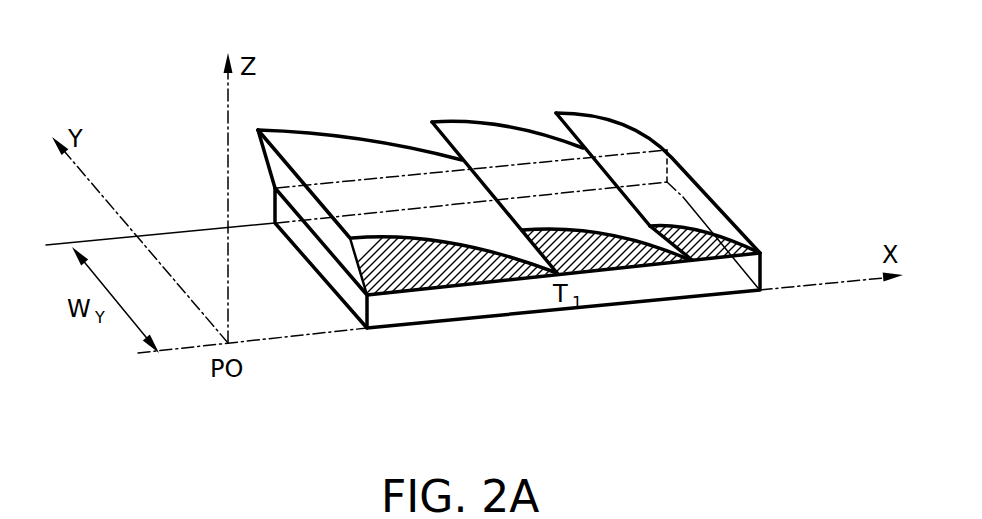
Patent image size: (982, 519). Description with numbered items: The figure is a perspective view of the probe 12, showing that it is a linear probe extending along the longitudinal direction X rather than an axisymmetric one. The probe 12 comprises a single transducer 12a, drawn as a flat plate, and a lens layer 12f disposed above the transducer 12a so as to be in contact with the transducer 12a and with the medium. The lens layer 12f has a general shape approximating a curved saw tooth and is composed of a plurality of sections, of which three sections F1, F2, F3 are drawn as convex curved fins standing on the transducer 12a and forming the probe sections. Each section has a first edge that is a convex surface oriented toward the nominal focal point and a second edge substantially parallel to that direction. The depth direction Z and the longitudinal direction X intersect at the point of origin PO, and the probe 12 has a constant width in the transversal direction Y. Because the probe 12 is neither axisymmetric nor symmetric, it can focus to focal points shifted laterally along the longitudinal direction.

The probe 12 is at (528, 261).
The transducer 12a is at (537, 265).
The lens layer 12f is at (683, 197).
The first section of the lens layer F1 is at (322, 145).
The second section of the lens layer F2 is at (482, 128).
The third section of the lens layer F3 is at (618, 135).